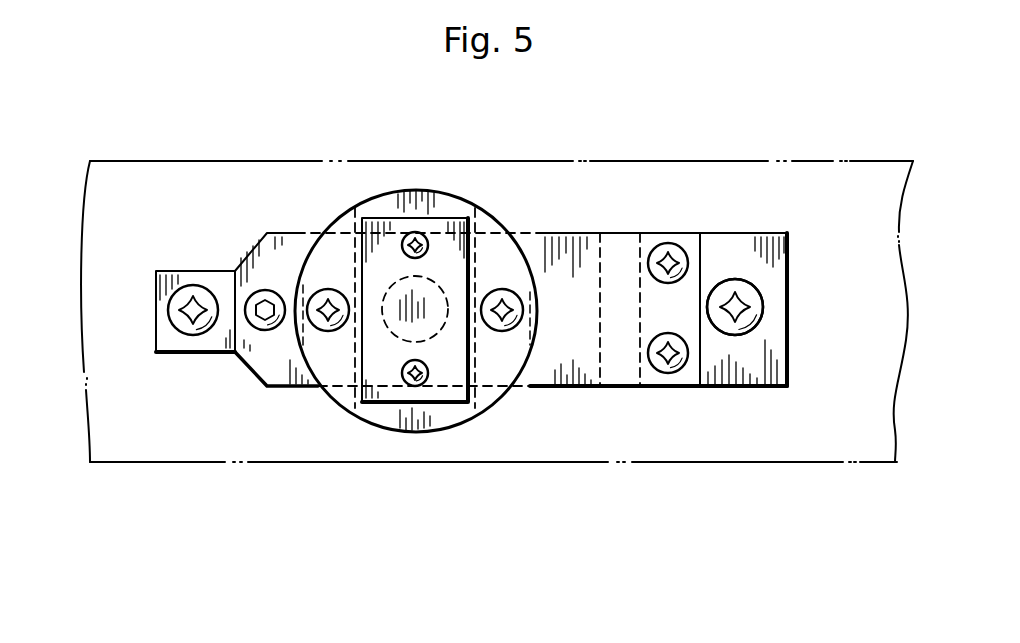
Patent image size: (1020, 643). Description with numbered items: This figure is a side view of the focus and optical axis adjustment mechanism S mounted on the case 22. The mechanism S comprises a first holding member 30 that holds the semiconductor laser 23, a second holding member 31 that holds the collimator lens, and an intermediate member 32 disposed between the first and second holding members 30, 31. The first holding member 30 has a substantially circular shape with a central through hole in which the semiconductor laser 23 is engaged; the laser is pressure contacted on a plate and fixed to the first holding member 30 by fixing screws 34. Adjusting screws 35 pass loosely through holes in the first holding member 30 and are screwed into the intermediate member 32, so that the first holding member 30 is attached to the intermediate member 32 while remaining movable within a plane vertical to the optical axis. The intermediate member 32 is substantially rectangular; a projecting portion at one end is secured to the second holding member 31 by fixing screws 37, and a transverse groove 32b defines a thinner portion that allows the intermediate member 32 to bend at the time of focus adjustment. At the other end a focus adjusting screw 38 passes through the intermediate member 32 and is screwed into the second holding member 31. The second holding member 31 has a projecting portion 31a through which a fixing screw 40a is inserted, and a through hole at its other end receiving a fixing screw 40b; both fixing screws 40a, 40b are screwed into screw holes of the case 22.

The case 22 is at (858, 184).
The focus and optical axis adjustment mechanism S is at (304, 138).
The semiconductor laser 23 is at (440, 330).
The first holding member 30 is at (404, 420).
The second holding member 31 is at (727, 372).
The projecting portion 31a is at (760, 233).
The intermediate member 32 is at (564, 372).
The groove 32b is at (601, 273).
The fixing screws 34 is at (420, 239).
The adjusting screws 35 is at (329, 304).
The fixing screws 37 is at (686, 260).
The focus adjusting screw 38 is at (265, 304).
The fixing screw 40a is at (760, 320).
The fixing screw 40b is at (195, 338).